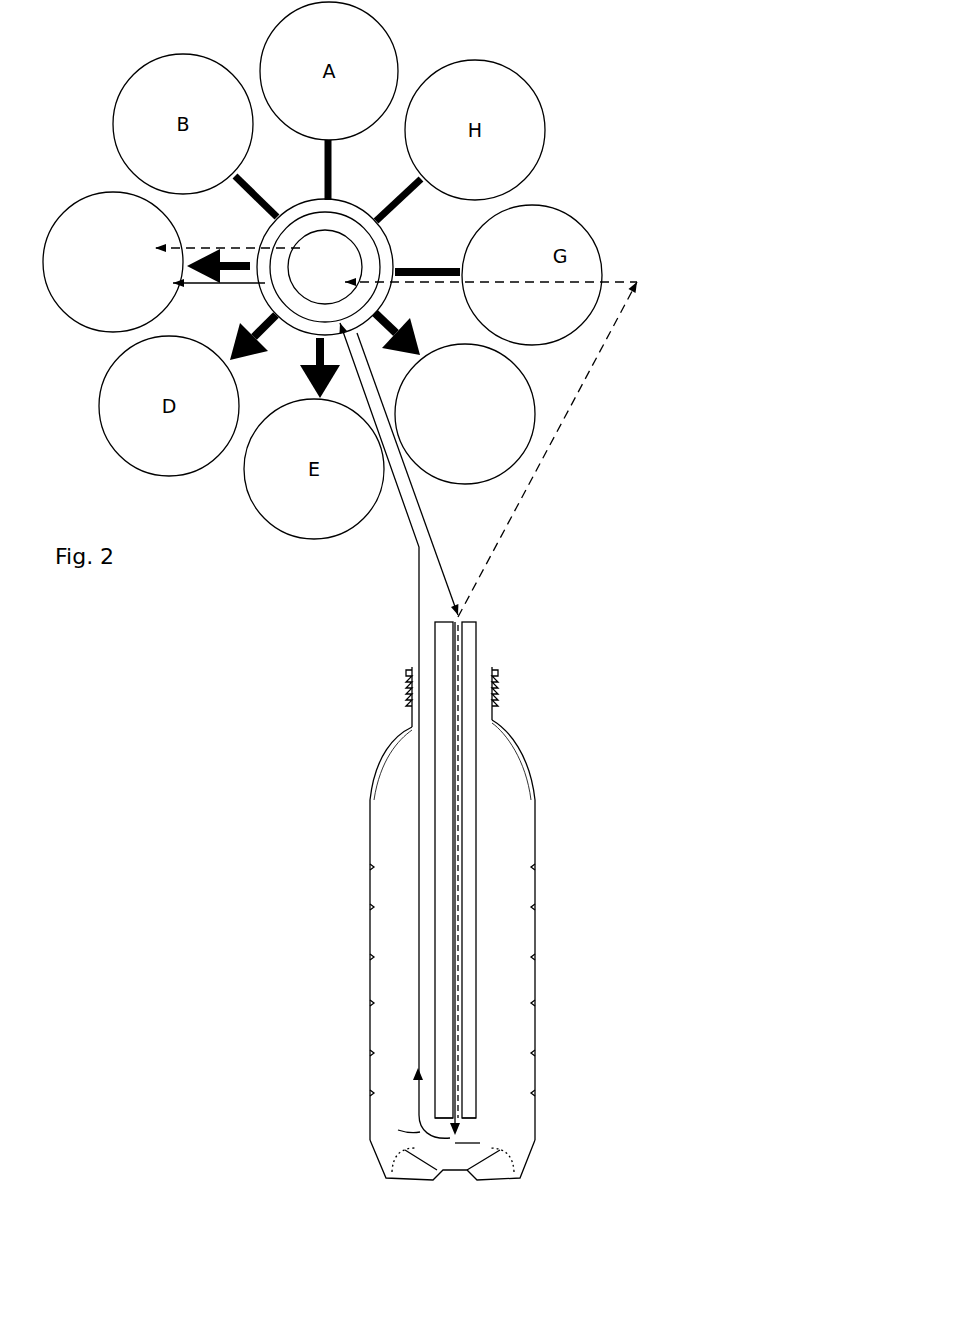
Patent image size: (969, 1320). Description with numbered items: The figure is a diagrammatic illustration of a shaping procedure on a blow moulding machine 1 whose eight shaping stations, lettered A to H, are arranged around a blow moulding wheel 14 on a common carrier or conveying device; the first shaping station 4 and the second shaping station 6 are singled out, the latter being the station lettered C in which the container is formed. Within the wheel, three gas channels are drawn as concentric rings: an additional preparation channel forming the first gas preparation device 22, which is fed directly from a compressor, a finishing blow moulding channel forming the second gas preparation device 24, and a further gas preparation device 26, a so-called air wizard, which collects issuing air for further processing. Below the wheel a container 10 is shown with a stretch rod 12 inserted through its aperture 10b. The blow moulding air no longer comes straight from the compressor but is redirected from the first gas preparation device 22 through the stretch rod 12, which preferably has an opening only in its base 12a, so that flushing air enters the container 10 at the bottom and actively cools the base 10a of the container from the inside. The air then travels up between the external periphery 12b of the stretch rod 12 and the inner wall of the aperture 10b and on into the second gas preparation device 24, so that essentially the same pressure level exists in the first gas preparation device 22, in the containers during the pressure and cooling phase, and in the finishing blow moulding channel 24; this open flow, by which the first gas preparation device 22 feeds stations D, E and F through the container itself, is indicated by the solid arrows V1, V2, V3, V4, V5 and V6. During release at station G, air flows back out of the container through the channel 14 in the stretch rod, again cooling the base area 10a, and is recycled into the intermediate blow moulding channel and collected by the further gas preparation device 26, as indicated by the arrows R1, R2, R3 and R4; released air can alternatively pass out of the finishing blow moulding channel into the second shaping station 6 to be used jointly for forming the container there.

The blow moulding machine 1 is at (248, 580).
The first shaping station 4 is at (507, 432).
The second shaping station 6 is at (113, 310).
The container 10 is at (518, 912).
The base of the container 10a is at (527, 1164).
The aperture of the container 10b is at (492, 677).
The stretch rod 12 is at (549, 870).
The base of the stretch rod 12a is at (468, 1098).
The external periphery of the stretch rod 12b is at (478, 1010).
The blow moulding wheel / channel in the stretch rod 14 is at (390, 237).
The first gas preparation device 22 is at (395, 264).
The second gas preparation device 24 is at (313, 307).
The further gas preparation device 26 is at (334, 251).
The release flow arrow R1 is at (460, 907).
The release flow arrow R2 is at (512, 510).
The release flow arrow R3 is at (580, 282).
The release flow arrow R4 is at (227, 238).
The blow moulding air flow arrow V1 is at (412, 734).
The blow moulding air flow arrow V2 is at (458, 825).
The blow moulding air flow arrow V3 is at (431, 1119).
The blow moulding air flow arrow V4 is at (403, 1031).
The blow moulding air flow arrow V5 is at (380, 719).
The blow moulding air flow arrow V6 is at (405, 293).